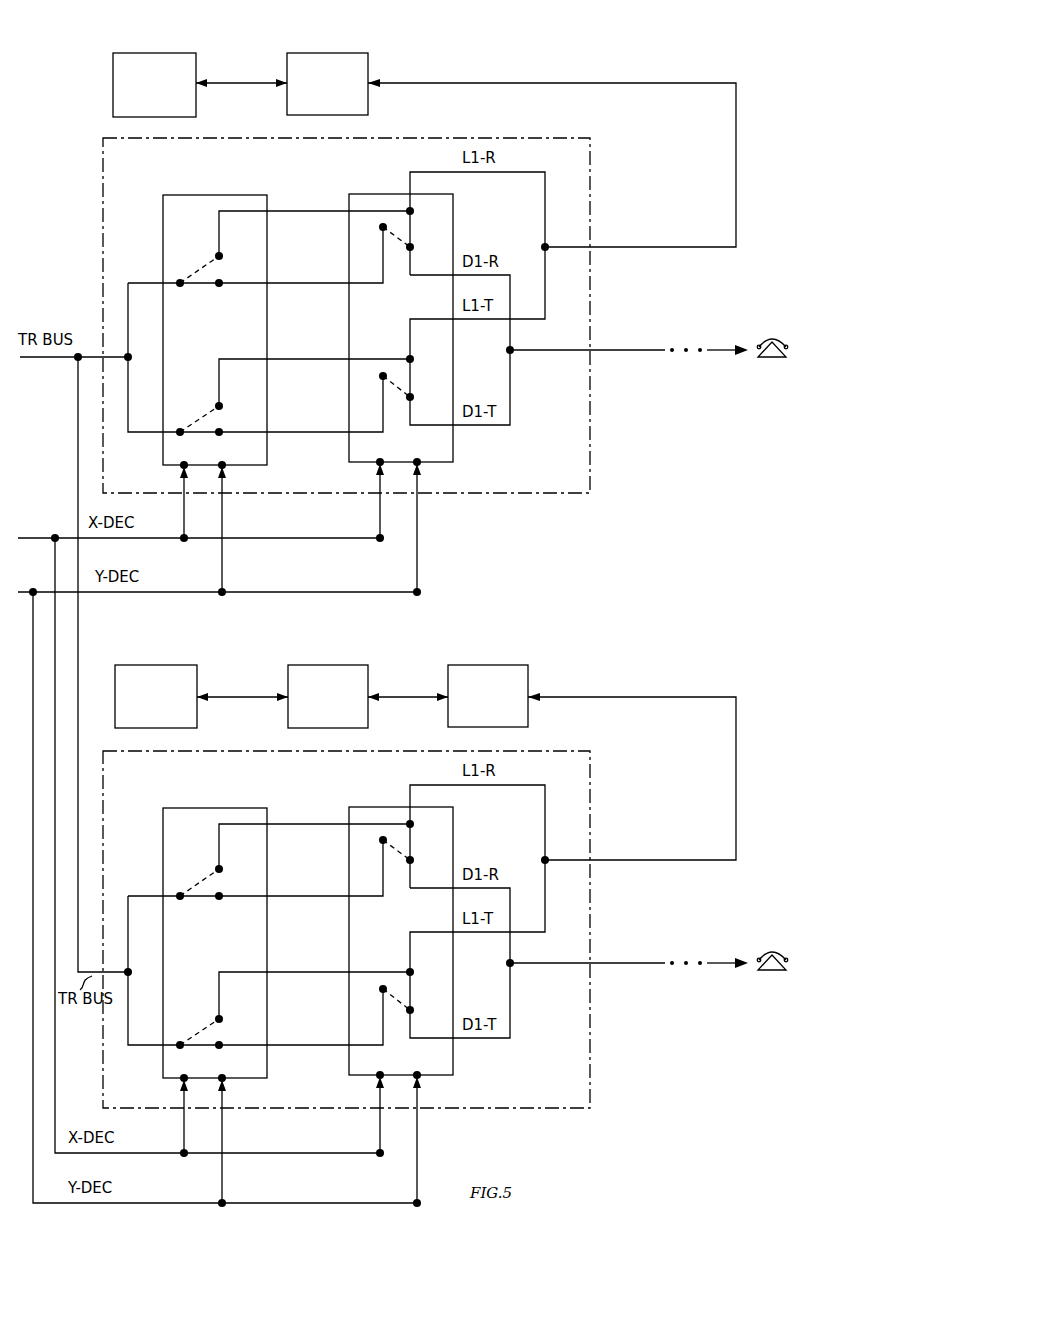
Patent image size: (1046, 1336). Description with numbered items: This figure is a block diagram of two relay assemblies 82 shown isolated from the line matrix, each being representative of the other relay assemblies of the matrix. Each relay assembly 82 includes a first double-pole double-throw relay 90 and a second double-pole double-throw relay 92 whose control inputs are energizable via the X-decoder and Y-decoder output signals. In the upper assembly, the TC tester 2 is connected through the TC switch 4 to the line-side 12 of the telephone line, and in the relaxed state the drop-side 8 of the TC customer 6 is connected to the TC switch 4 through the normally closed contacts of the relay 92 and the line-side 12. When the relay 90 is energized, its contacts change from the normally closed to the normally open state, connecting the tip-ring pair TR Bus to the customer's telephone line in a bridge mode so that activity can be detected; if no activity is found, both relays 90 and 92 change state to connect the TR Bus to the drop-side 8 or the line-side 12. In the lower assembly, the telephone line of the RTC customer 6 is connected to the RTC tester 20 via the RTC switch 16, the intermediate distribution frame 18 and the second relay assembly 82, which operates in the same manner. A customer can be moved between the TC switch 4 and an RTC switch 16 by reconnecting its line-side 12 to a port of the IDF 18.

The TC tester 2 is at (188, 53).
The TC switch 4 is at (355, 53).
The line-side 12 is at (716, 82).
The relay assembly 82 is at (590, 481).
The first double-pole double-throw relay 90 is at (176, 195).
The second double-pole double-throw relay 92 is at (385, 194).
The drop-side 8 is at (722, 356).
The customer 6 is at (775, 338).
The RTC tester 20 is at (188, 665).
The RTC switch 16 is at (350, 665).
The intermediate distribution frame 18 is at (510, 665).